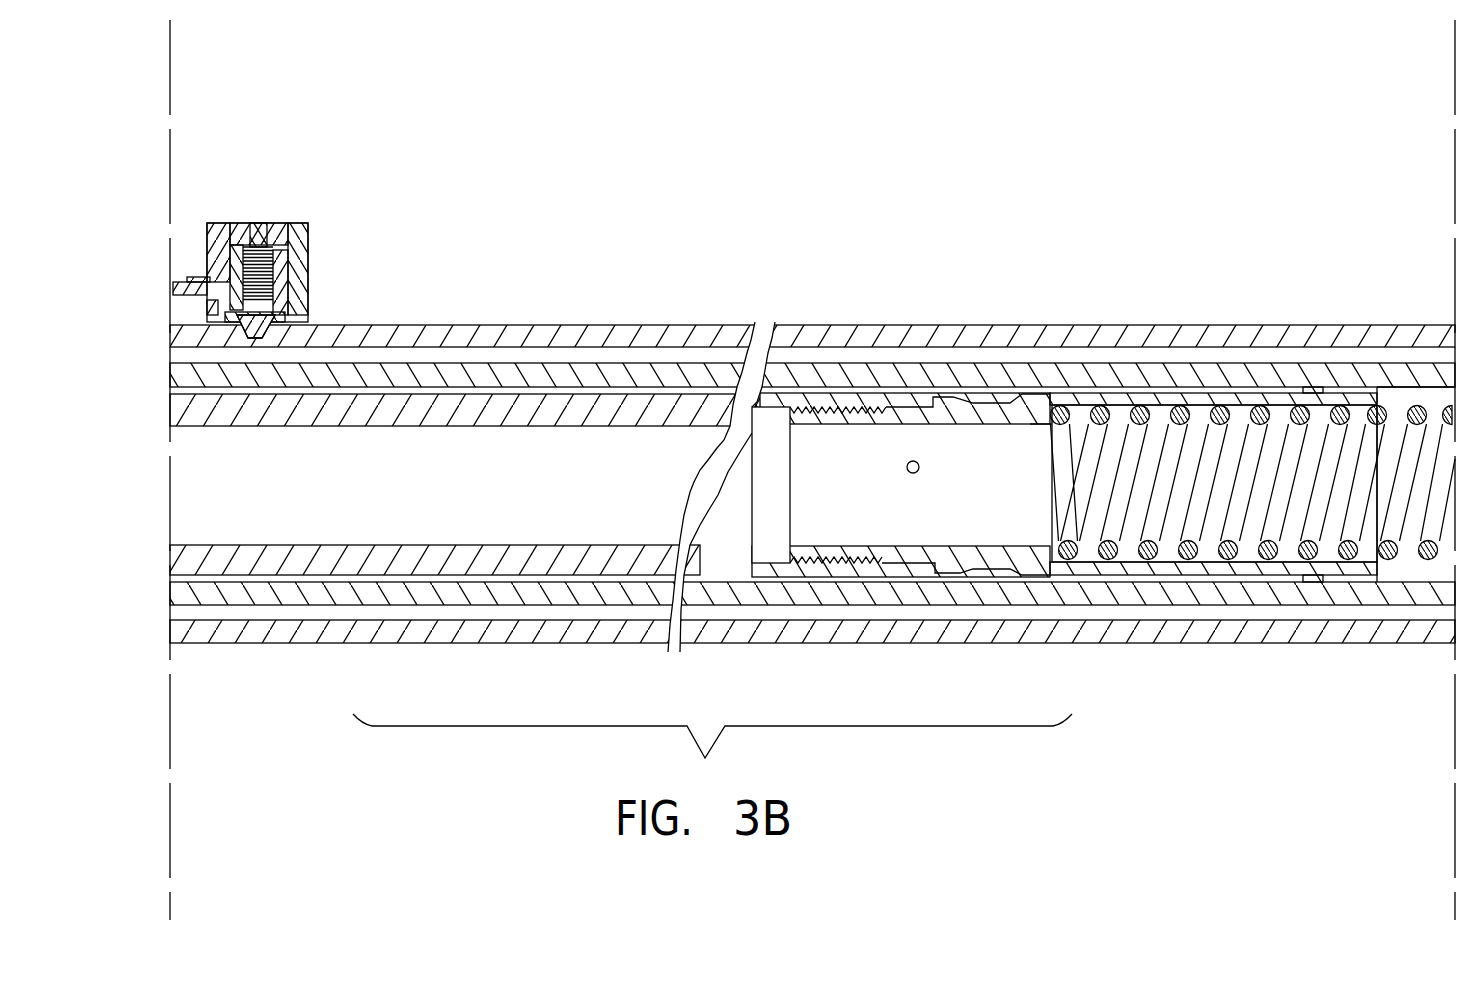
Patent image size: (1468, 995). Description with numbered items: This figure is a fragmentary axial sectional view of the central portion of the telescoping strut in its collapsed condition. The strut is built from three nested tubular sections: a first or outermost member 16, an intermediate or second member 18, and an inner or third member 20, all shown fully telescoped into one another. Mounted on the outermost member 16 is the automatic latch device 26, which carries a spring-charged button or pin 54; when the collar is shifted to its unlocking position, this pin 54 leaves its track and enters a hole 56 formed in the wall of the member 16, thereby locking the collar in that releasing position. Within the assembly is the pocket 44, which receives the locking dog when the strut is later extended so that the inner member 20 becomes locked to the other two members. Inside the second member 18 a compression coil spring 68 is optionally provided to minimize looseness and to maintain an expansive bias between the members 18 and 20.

The first or outermost section or member 16 is at (506, 335).
The intermediate or second section or member 18 is at (555, 378).
The inner or third section or member 20 is at (445, 400).
The automatic latch device 26 is at (250, 303).
The pocket 44 is at (990, 573).
The spring-charged button or pin 54 is at (247, 337).
The hole 56 is at (283, 337).
The compression coil spring 68 is at (1243, 518).